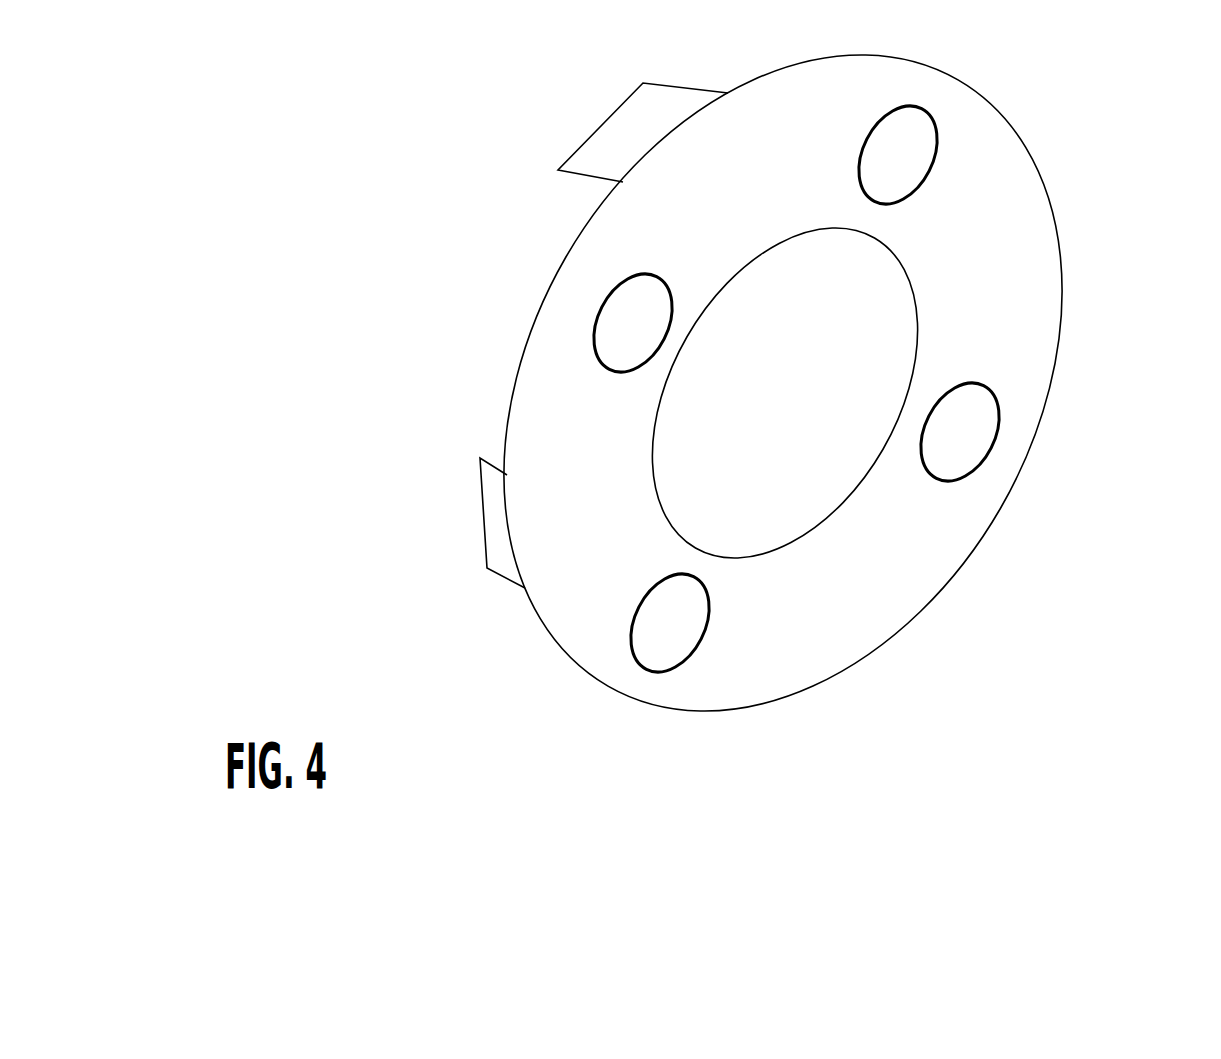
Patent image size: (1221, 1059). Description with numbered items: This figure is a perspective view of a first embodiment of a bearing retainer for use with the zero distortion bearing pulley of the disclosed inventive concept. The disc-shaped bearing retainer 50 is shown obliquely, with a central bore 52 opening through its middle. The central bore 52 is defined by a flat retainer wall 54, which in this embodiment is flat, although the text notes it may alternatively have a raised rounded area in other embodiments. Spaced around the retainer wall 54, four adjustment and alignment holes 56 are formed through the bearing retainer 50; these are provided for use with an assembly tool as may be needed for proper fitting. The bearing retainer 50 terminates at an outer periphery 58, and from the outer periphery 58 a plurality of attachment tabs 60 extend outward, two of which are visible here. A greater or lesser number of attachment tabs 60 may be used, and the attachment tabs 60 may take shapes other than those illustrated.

The bearing retainer 50 is at (1023, 292).
The central bore 52 is at (793, 240).
The retainer wall 54 is at (847, 488).
The adjustment and alignment holes 56 is at (618, 338).
The outer periphery 58 is at (577, 243).
The attachment tabs 60 is at (627, 137).